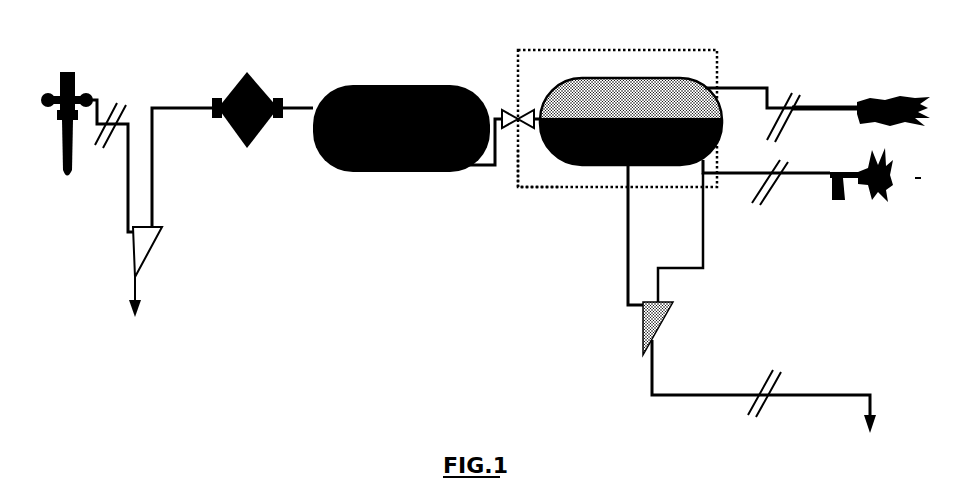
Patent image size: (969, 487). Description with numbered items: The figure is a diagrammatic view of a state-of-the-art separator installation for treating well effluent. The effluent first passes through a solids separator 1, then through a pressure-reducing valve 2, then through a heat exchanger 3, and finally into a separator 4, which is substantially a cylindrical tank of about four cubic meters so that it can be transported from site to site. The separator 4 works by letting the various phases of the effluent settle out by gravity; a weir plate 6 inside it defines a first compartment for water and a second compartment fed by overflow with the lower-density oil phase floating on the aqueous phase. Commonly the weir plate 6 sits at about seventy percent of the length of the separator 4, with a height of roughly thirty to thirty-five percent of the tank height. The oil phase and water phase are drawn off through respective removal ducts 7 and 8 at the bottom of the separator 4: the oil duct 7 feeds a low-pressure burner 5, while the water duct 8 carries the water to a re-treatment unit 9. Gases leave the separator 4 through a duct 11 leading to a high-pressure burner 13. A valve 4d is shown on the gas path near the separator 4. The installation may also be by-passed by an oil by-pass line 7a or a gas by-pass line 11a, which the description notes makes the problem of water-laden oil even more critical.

The solids separator 1 is at (133, 267).
The pressure-reducing valve 2 is at (223, 95).
The heat exchanger 3 is at (343, 87).
The separator 4 is at (653, 78).
The valve 4d is at (512, 108).
The low-pressure burner 5 is at (863, 187).
The weir plate 6 is at (670, 163).
The oil removal duct 7 is at (742, 176).
The oil by-pass line 7a is at (518, 180).
The water removal duct 8 is at (627, 240).
The re-treatment unit 9 is at (657, 330).
The gas duct 11 is at (763, 95).
The gas by-pass line 11a is at (540, 47).
The high-pressure burner 13 is at (863, 102).